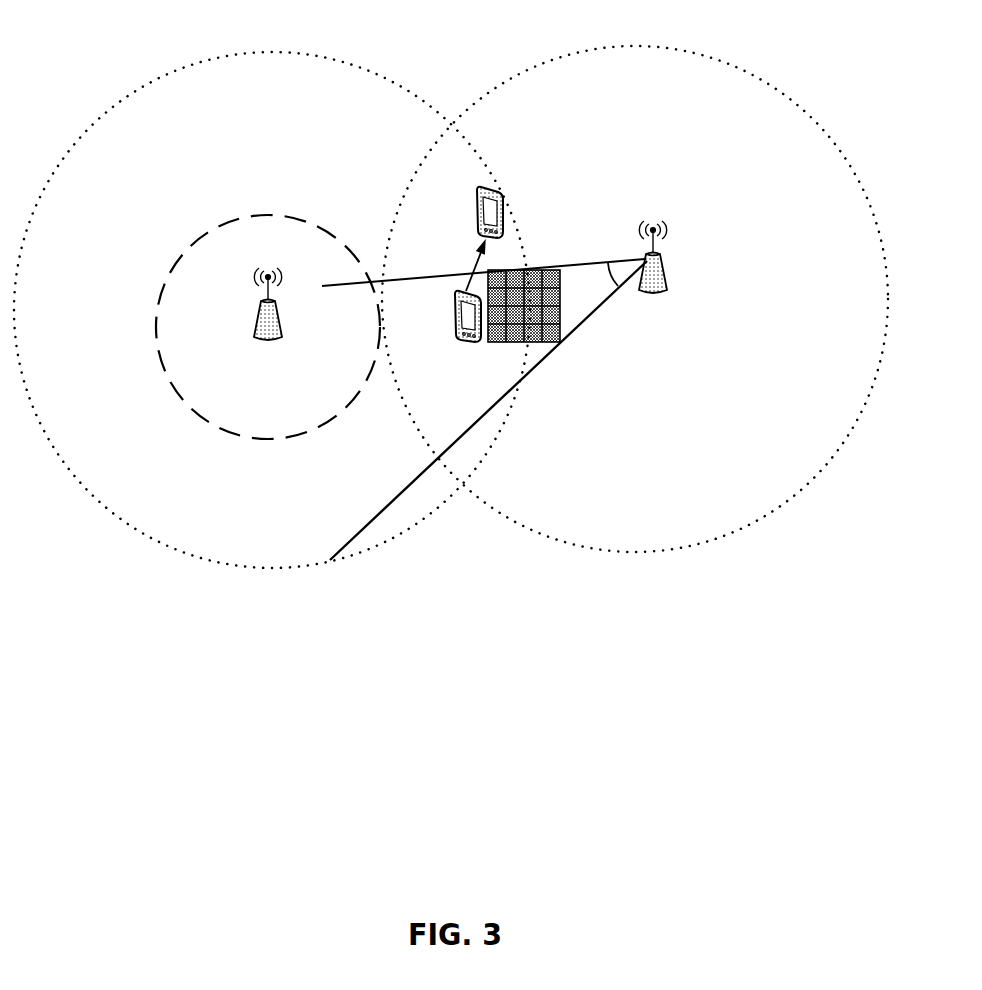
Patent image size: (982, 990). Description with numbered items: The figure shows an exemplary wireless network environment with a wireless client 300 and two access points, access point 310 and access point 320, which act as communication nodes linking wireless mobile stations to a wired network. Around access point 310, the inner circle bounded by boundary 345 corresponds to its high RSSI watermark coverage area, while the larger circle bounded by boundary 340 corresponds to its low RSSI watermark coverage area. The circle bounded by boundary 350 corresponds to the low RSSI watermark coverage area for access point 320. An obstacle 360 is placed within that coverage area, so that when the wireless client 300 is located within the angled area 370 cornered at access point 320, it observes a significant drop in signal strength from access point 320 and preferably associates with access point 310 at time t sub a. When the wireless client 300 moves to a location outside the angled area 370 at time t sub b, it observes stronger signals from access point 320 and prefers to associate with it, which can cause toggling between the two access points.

The wireless client 300 is at (557, 454).
The access point 310 is at (284, 410).
The access point 320 is at (674, 366).
The boundary 340 is at (274, 52).
The boundary 345 is at (266, 214).
The boundary 350 is at (635, 46).
The obstacle 360 is at (507, 297).
The angled area 370 is at (610, 281).